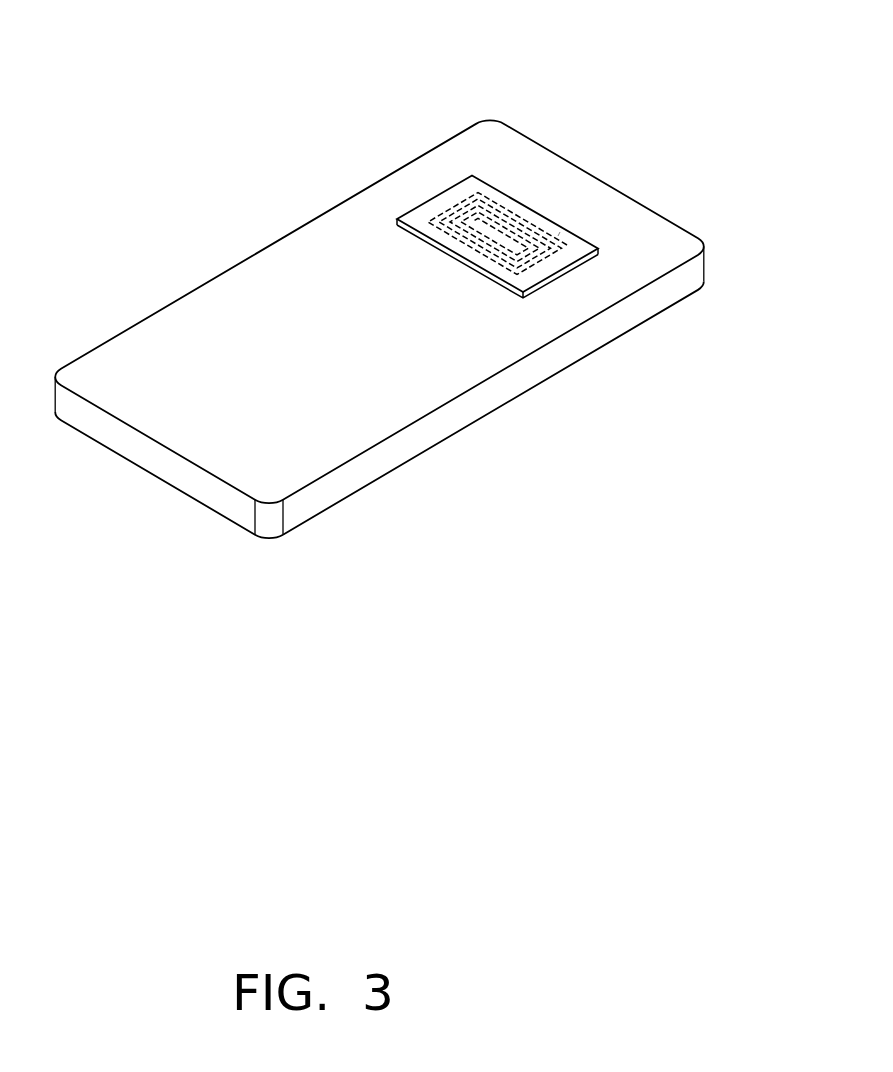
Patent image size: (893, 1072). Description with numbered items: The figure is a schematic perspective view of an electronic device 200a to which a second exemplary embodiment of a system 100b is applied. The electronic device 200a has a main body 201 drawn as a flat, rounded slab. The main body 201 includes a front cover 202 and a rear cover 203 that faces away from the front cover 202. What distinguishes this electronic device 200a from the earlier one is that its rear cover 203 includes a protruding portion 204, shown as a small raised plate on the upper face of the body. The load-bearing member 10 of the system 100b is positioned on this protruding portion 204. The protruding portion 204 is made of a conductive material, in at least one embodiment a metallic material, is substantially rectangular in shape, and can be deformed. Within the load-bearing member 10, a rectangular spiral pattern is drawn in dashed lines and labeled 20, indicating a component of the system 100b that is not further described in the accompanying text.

The electronic device 200a is at (384, 302).
The load-bearing member 10 is at (475, 202).
The antenna coil 20 is at (442, 213).
The system 100b is at (523, 239).
The main body 201 is at (425, 435).
The front cover 202 is at (538, 383).
The rear cover 203 is at (513, 152).
The protruding portion 204 is at (560, 232).